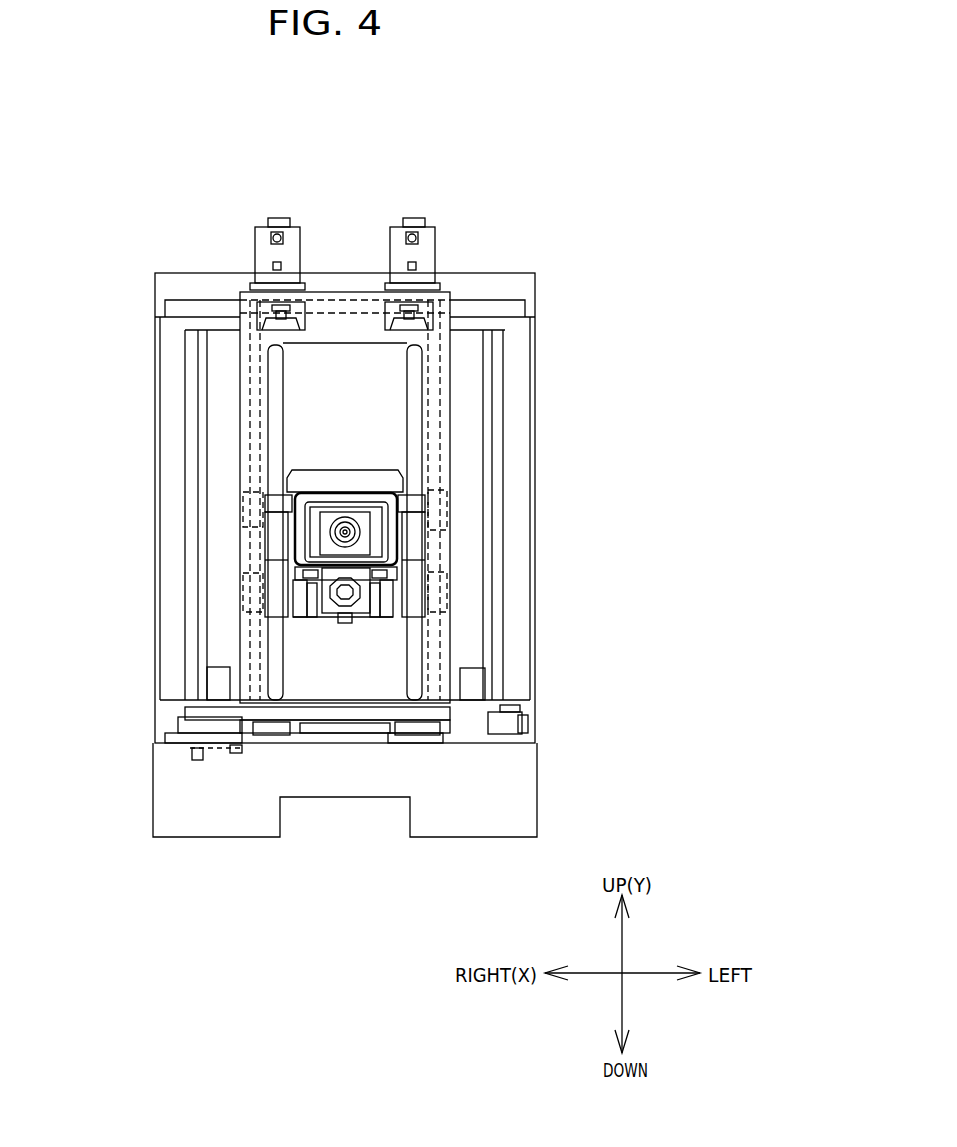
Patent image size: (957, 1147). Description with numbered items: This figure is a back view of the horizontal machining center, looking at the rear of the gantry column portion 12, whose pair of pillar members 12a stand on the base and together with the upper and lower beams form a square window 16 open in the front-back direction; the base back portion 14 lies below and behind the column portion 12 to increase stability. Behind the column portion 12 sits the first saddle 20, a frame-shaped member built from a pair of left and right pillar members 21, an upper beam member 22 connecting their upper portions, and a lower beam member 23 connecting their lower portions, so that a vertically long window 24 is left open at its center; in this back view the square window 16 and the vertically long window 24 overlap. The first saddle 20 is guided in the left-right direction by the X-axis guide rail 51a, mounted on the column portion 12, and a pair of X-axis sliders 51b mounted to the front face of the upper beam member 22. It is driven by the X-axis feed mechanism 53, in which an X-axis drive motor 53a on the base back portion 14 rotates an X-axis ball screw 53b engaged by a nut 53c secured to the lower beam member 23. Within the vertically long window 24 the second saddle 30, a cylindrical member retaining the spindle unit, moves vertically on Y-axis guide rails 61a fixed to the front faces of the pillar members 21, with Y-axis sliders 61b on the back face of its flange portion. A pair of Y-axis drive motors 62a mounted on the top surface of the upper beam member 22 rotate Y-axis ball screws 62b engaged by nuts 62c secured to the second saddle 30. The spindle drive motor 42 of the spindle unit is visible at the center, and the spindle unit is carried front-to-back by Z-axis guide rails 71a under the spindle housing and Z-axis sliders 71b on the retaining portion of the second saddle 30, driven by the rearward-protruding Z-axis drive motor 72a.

The column portion 12 is at (540, 277).
The pillar member 12a is at (536, 417).
The base back portion 14 is at (520, 782).
The square window 16 is at (478, 411).
The first saddle 20 is at (238, 403).
The pillar member 21 is at (243, 378).
The upper beam member 22 is at (345, 325).
The lower beam member 23 is at (308, 707).
The vertically long window 24 is at (358, 392).
The second saddle 30 is at (310, 470).
The spindle drive motor 42 is at (350, 520).
The X-axis guide rail 51a is at (190, 307).
The X-axis slider 51b is at (255, 293).
The X-axis feed mechanism 53 is at (225, 755).
The X-axis drive motor 53a is at (203, 731).
The X-axis ball screw 53b is at (358, 730).
The nut 53c is at (403, 745).
The Y-axis guide rail 61a is at (257, 475).
The Y-axis slider 61b is at (253, 515).
The Y-axis drive motor 62a is at (263, 233).
The Y-axis ball screw 62b is at (280, 442).
The nut 62c is at (267, 545).
The Z-axis guide rail 71a is at (340, 600).
The Z-axis slider 71b is at (313, 578).
The Z-axis drive motor 72a is at (347, 612).